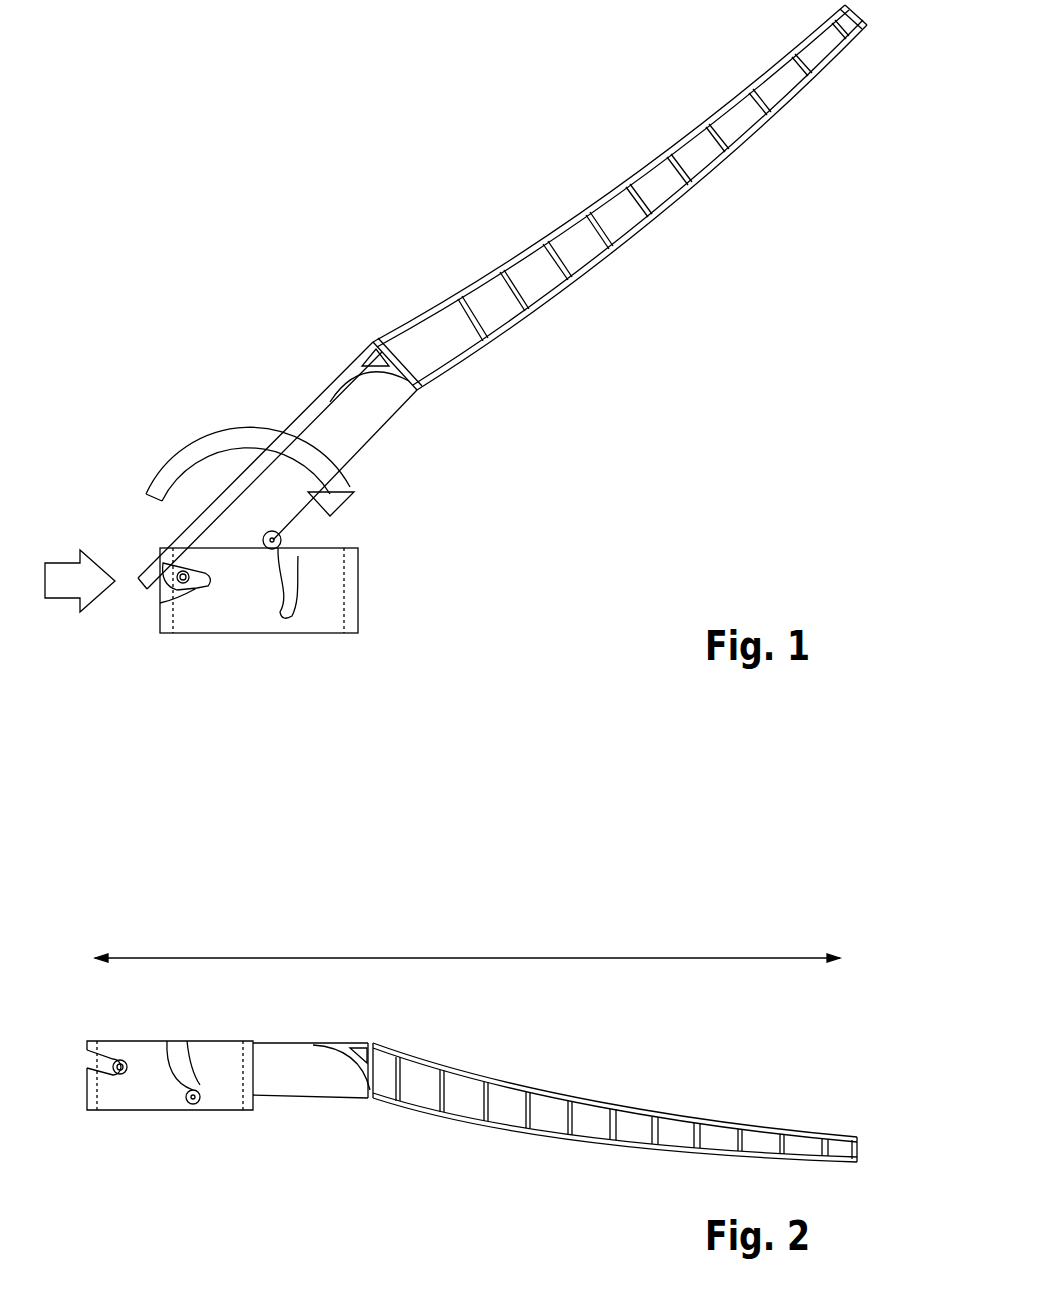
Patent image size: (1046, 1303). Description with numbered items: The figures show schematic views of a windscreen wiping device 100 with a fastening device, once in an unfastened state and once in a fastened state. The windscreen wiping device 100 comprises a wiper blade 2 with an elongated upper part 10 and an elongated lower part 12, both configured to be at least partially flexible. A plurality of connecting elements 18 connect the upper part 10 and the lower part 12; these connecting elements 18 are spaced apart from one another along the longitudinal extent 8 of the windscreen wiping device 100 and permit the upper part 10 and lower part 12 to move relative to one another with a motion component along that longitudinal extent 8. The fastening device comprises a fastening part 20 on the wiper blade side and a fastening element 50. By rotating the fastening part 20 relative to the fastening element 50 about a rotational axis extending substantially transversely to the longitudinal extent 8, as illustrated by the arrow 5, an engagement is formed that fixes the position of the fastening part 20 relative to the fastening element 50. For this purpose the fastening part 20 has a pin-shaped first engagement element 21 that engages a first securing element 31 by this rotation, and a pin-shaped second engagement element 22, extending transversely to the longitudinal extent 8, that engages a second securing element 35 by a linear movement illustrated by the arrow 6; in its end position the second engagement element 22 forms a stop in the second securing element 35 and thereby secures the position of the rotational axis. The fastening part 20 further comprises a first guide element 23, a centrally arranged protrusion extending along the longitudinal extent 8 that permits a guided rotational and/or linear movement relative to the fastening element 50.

In FIG. 1, the windscreen wiping device 100 is at (142, 104).
In FIG. 2, the windscreen wiping device 100 is at (142, 918).
In FIG. 1, the wiper blade 2 is at (763, 202).
In FIG. 2, the wiper blade 2 is at (462, 1146).
In FIG. 1, the arrow 5 is at (338, 476).
In FIG. 1, the arrow 6 is at (60, 572).
In FIG. 2, the longitudinal extent 8 is at (450, 955).
In FIG. 1, the upper part 10 is at (760, 77).
In FIG. 2, the upper part 10 is at (680, 1110).
In FIG. 1, the lower part 12 is at (612, 258).
In FIG. 2, the lower part 12 is at (598, 1155).
In FIG. 1, the connecting elements 18 is at (712, 143).
In FIG. 2, the connecting elements 18 is at (815, 1133).
In FIG. 1, the fastening part on the wiper blade side 20 is at (243, 512).
In FIG. 2, the fastening part on the wiper blade side 20 is at (303, 1060).
In FIG. 1, the first engagement element 21 is at (282, 540).
In FIG. 2, the first engagement element 21 is at (193, 1097).
In FIG. 1, the second engagement element 22 is at (158, 569).
In FIG. 2, the second engagement element 22 is at (107, 1062).
In FIG. 1, the first guide element 23 is at (277, 510).
In FIG. 1, the first securing element 31 is at (300, 605).
In FIG. 2, the first securing element 31 is at (183, 1065).
In FIG. 1, the second securing element 35 is at (160, 607).
In FIG. 1, the fastening element 50 is at (227, 613).
In FIG. 2, the fastening element 50 is at (130, 1100).